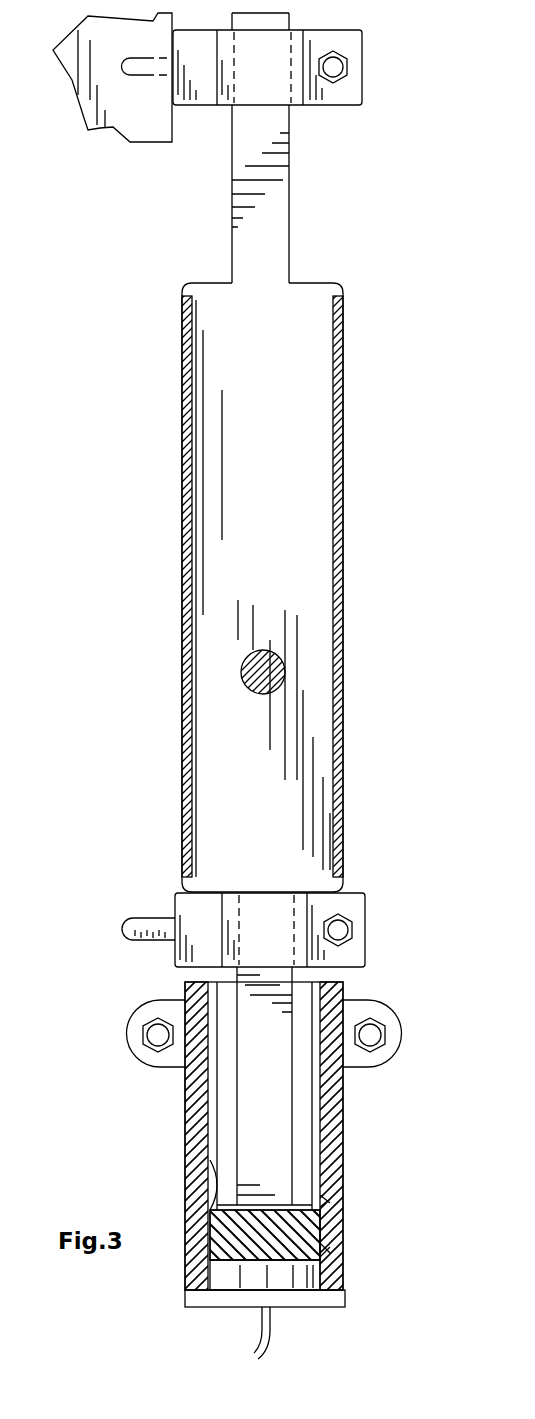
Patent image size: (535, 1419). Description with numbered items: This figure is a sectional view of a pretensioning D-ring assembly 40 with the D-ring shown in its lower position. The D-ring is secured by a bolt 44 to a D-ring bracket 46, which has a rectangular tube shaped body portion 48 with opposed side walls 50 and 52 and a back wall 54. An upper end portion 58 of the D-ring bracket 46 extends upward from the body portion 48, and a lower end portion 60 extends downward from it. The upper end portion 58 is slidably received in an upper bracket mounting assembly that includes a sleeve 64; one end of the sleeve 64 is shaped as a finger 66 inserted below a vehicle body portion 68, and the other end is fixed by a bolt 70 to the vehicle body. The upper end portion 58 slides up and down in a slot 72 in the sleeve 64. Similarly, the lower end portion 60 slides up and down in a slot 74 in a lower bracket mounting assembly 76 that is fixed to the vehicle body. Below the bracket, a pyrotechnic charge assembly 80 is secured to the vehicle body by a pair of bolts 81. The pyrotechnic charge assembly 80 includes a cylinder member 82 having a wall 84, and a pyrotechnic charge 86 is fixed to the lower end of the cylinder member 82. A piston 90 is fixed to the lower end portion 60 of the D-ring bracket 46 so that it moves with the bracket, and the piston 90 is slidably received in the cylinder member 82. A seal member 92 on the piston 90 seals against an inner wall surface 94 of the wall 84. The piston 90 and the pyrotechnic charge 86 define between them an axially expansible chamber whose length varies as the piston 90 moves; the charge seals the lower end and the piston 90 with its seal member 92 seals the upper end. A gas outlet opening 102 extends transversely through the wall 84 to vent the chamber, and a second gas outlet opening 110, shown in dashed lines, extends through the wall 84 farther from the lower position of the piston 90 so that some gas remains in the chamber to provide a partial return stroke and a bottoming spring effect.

The pretensioning D-ring assembly 40 is at (273, 587).
The bolt 44 is at (272, 679).
The D-ring bracket 46 is at (254, 587).
The body portion 48 is at (182, 417).
The side wall 50 is at (188, 490).
The side wall 52 is at (342, 490).
The back wall 54 is at (277, 411).
The upper end portion 58 is at (274, 241).
The lower end portion 60 is at (277, 1032).
The sleeve 64 is at (302, 98).
The finger 66 is at (150, 75).
The vehicle body portion 68 is at (82, 106).
The bolt 70 is at (346, 63).
The slot 72 is at (233, 48).
The slot 74 is at (236, 918).
The lower bracket mounting assembly 76 is at (173, 912).
The pyrotechnic charge assembly 80 is at (257, 1155).
The bolts 81 is at (152, 1022).
The cylinder member 82 is at (343, 1103).
The wall 84 is at (333, 1155).
The pyrotechnic charge 86 is at (245, 1290).
The piston 90 is at (240, 1243).
The seal member 92 is at (322, 1240).
The inner wall surface 94 is at (212, 1198).
The gas outlet opening 102 is at (333, 1250).
The gas outlet opening 110 is at (343, 1199).